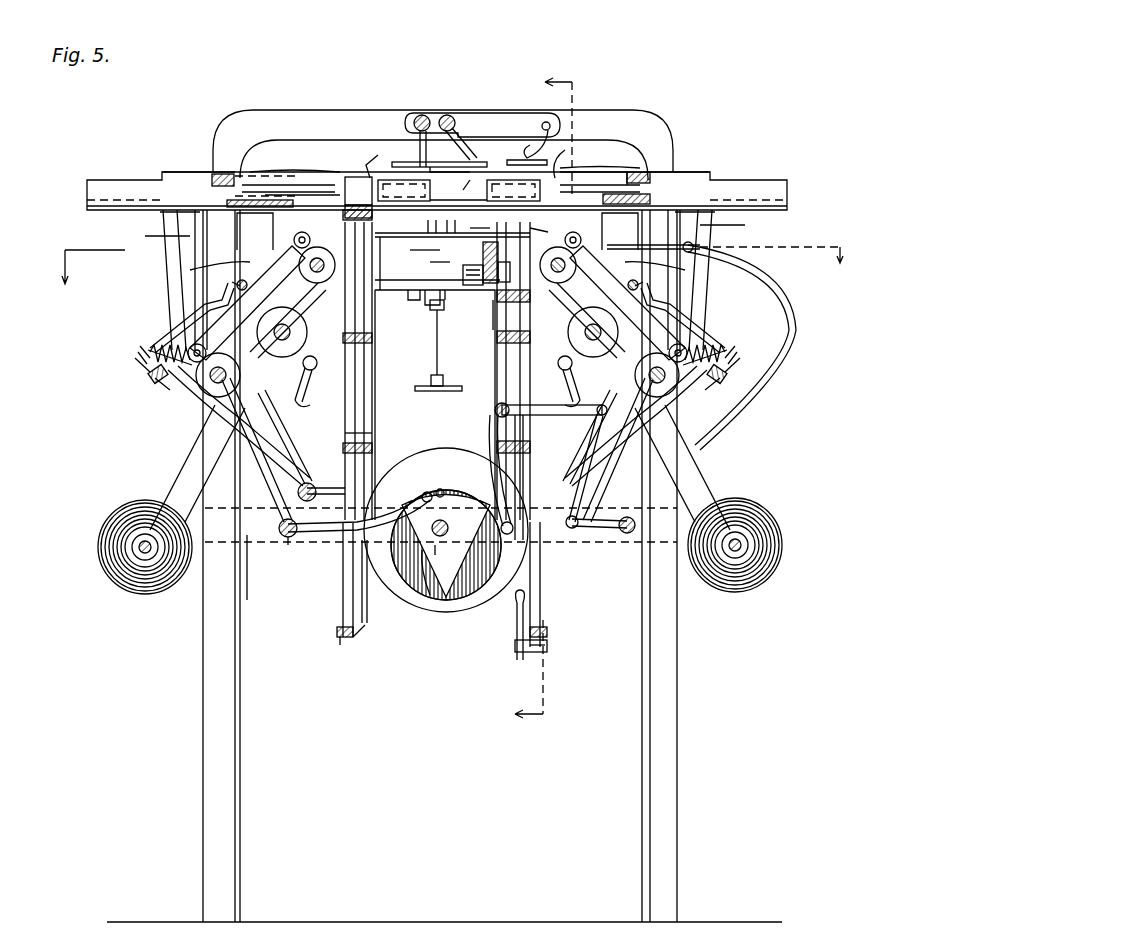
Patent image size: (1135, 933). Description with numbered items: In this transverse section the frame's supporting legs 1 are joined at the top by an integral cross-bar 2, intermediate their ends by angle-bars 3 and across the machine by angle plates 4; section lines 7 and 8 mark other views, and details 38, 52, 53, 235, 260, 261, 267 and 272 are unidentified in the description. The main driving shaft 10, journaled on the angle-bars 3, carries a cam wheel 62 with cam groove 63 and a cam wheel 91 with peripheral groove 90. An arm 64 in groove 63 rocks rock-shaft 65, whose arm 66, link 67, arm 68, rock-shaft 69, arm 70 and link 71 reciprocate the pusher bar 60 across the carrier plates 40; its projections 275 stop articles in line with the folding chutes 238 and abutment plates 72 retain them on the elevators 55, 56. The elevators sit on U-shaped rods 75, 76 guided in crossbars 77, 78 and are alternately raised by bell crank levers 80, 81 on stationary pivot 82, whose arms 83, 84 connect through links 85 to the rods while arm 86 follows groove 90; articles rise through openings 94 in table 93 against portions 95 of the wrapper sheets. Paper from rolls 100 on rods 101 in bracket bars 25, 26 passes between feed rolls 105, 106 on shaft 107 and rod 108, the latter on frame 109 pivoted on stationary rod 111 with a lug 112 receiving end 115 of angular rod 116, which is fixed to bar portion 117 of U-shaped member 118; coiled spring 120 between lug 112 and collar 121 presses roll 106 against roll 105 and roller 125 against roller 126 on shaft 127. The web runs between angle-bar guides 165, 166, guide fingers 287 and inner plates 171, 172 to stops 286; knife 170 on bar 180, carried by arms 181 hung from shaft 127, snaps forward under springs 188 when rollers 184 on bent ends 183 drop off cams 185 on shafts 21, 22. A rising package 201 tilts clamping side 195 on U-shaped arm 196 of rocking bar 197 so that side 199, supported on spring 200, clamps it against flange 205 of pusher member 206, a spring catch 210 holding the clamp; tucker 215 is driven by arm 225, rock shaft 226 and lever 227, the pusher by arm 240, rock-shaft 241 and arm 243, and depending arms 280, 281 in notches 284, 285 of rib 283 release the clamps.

The supporting legs 1 is at (665, 750).
The cross-bar 2 is at (245, 110).
The angle-bars 3 is at (254, 571).
The angle plates 4 is at (444, 227).
The section line 7- 7 is at (450, 251).
The section line 8- 8 is at (552, 395).
The main driving shaft 10 is at (430, 580).
The horizontal shaft 21 is at (240, 390).
The horizontal shaft 22 is at (630, 380).
The bracket bar 25 is at (145, 500).
The bracket bar 26 is at (700, 483).
The rod 38 is at (430, 342).
The carrier plates 40 is at (436, 359).
The lug 52 is at (457, 318).
The lug 53 is at (415, 300).
The elevators 55 is at (493, 330).
The elevators 56 is at (380, 263).
The pusher bar 60 is at (483, 252).
The cam wheel 62 is at (440, 535).
The cam groove 63 is at (460, 610).
The arm 64 is at (488, 425).
The rock-shaft 65 is at (495, 408).
The arm 66 is at (560, 415).
The link 67 is at (588, 450).
The arm 68 is at (590, 528).
The rock-shaft 69 is at (625, 533).
The arm 70 is at (760, 375).
The link 71 is at (655, 236).
The abutment plates 72 is at (435, 386).
The U-shaped rod 75 is at (540, 477).
The U-shaped rod 76 is at (345, 437).
The crossbar 77 is at (497, 338).
The crossbar 78 is at (375, 365).
The bell crank lever 80 is at (552, 645).
The bell crank lever 81 is at (340, 642).
The stationary pivot 82 is at (337, 630).
The arm 83 is at (546, 652).
The arm 84 is at (370, 640).
The links 85 is at (370, 590).
The arm 86 is at (540, 598).
The cam groove 90 is at (405, 600).
The cam wheel 91 is at (432, 450).
The platform 93 is at (421, 241).
The openings 94 is at (452, 220).
The wrapper sheet portions 95 is at (543, 220).
The paper rolls 100 is at (115, 575).
The rods 101 is at (140, 555).
The feed roll 105 is at (180, 400).
The feed roll 106 is at (138, 352).
The shaft 107 is at (215, 415).
The rod 108 is at (140, 346).
The frame 109 is at (155, 380).
The stationary rod 111 is at (160, 280).
The lug 112 is at (150, 372).
The rod end 115 is at (135, 360).
The angular rod 116 is at (193, 300).
The bar portion 117 is at (170, 290).
The U-shaped frame member 118 is at (437, 303).
The coiled spring 120 is at (150, 360).
The collar 121 is at (150, 352).
The roller 125 is at (437, 231).
The roller 126 is at (437, 254).
The shaft 127 is at (437, 273).
The outer guide member 165 is at (222, 306).
The outer guide member 166 is at (218, 300).
The cutting knife 170 is at (437, 332).
The inner guide plate 171 is at (195, 365).
The inner guide plate 172 is at (437, 320).
The knife bar 180 is at (258, 420).
The depending arms 181 is at (200, 270).
The bent ends 183 is at (435, 394).
The rollers 184 is at (437, 385).
The cams 185 is at (437, 353).
The coiled springs 188 is at (210, 420).
The clamping member side 195 is at (420, 160).
The U-shaped arm 196 is at (440, 150).
The rocking bar 197 is at (445, 114).
The clamping member side 199 is at (605, 130).
The spring 200 is at (615, 100).
The package 201 is at (363, 197).
The flange 205 is at (415, 114).
The pusher member 206 is at (469, 185).
The spring catch 210 is at (485, 159).
The tucker member 215 is at (481, 215).
The arm 225 is at (325, 488).
The rock shaft 226 is at (298, 490).
The lever 227 is at (270, 450).
The box 235 is at (459, 190).
The folding chutes 238 is at (175, 172).
The arm 240 is at (320, 530).
The rock-shaft 241 is at (283, 540).
The arm 243 is at (269, 522).
The plate 260 is at (260, 178).
The bar 261 is at (245, 185).
The top bar 267 is at (437, 191).
The block 272 is at (222, 178).
The projections 275 is at (482, 263).
The depending arm 280 is at (439, 150).
The depending arm 281 is at (476, 144).
The rib 283 is at (458, 201).
The notch 284 is at (450, 155).
The notch 285 is at (482, 125).
The stops 286 is at (426, 261).
The guide fingers 287 is at (459, 267).